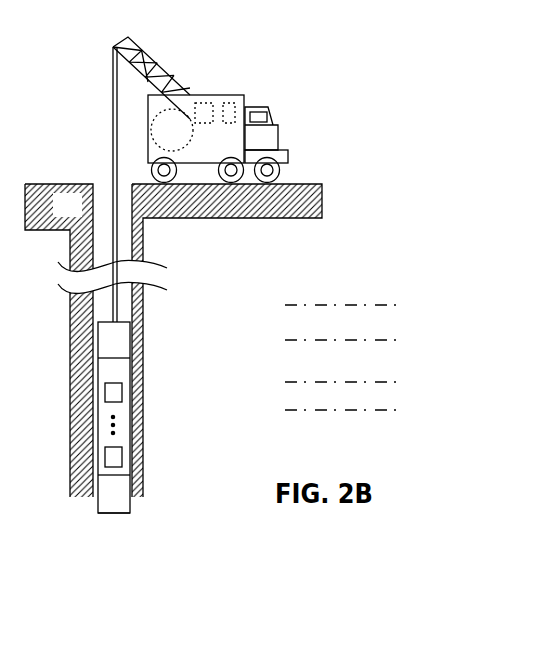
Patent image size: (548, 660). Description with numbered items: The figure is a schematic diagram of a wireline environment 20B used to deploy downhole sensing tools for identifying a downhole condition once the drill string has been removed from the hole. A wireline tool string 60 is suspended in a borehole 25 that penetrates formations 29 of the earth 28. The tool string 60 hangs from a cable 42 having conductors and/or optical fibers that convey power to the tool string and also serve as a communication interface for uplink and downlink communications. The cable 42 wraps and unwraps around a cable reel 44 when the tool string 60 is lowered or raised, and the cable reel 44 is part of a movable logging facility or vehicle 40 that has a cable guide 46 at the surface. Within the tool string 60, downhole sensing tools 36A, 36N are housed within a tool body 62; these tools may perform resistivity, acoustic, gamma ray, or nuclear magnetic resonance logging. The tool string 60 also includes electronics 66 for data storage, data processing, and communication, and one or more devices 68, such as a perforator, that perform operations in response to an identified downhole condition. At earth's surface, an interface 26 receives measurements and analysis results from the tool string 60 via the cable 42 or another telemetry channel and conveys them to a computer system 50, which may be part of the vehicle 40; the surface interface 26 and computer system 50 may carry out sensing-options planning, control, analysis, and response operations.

The wireline environment 20B is at (362, 49).
The borehole 25 is at (105, 197).
The surface interface 26 is at (203, 100).
The earth 28 is at (78, 215).
The formations 29 is at (413, 295).
The downhole sensing tool 36A is at (123, 397).
The downhole sensing tool 36N is at (123, 457).
The vehicle 40 is at (280, 139).
The cable 42 is at (112, 139).
The cable reel 44 is at (160, 138).
The cable guide 46 is at (142, 48).
The computer system 50 is at (237, 100).
The wireline tool string 60 is at (175, 422).
The tool body 62 is at (130, 418).
The electronics 66 is at (130, 343).
The device 68 is at (142, 510).